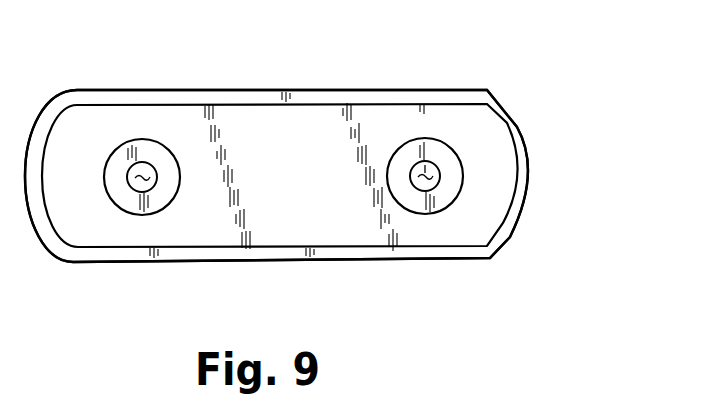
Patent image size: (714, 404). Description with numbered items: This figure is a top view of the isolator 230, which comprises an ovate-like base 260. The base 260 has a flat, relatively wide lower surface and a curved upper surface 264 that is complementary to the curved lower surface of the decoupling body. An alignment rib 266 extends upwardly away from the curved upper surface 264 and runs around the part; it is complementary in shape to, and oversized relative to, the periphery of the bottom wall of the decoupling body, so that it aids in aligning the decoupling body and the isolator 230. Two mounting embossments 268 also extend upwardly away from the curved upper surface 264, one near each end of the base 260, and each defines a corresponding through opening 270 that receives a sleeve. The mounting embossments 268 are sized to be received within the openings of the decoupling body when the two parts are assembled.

The isolator 230 is at (540, 143).
The ovate-like base 260 is at (183, 262).
The curved upper surface 264 is at (308, 192).
The alignment rib 266 is at (267, 92).
The mounting embossments 268 is at (125, 146).
The through openings 270 is at (143, 163).